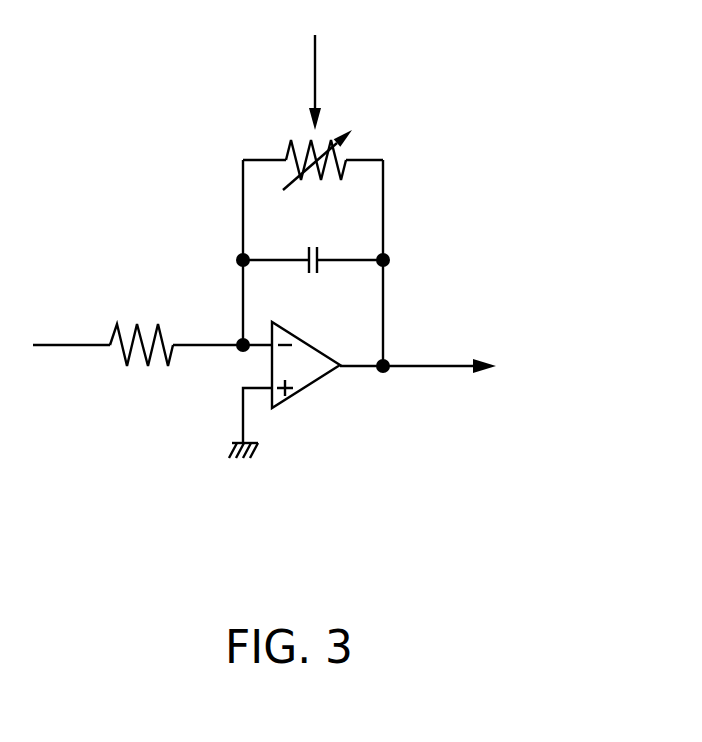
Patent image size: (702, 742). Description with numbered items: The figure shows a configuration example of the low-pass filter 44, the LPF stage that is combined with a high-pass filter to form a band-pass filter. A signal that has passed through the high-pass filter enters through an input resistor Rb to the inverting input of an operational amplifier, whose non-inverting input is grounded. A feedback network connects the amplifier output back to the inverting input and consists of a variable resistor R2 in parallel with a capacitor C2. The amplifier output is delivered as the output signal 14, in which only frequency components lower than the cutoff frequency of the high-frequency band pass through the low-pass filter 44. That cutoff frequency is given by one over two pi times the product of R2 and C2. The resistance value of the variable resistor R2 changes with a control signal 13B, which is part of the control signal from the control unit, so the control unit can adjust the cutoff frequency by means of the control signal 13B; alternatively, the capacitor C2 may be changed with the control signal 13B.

The low-pass filter 44 is at (555, 46).
The control signal 13B is at (312, 87).
The output signal 14 is at (430, 366).
The variable resistor R2 is at (317, 168).
The capacitor C2 is at (314, 278).
The input resistor Rb is at (103, 366).